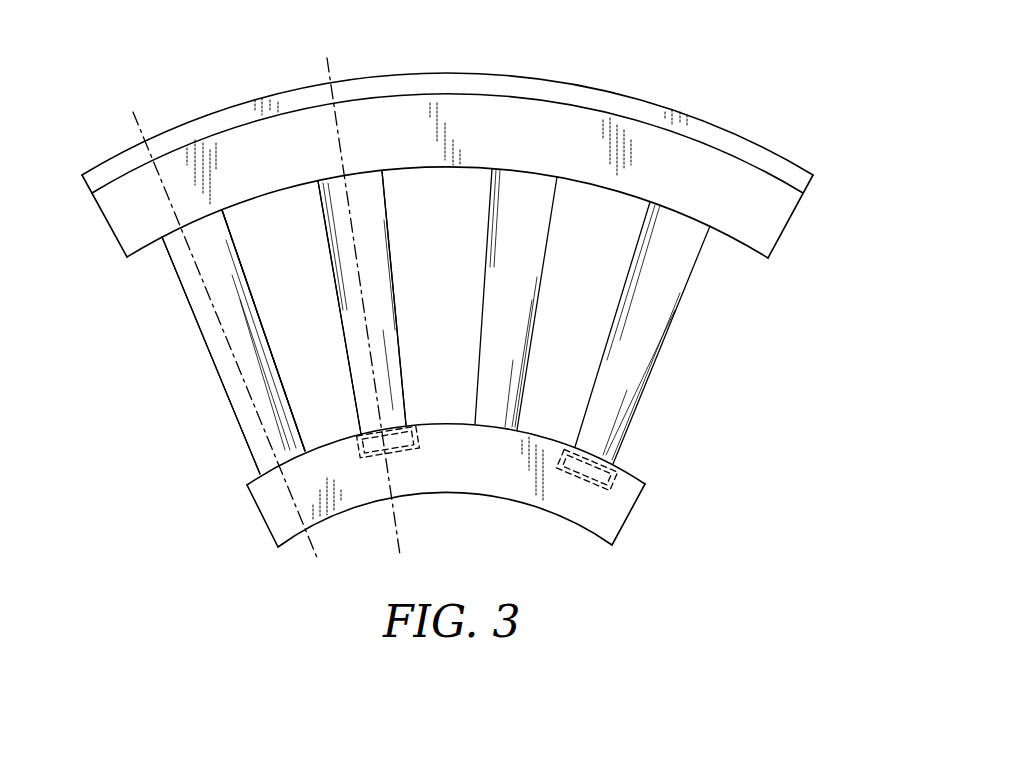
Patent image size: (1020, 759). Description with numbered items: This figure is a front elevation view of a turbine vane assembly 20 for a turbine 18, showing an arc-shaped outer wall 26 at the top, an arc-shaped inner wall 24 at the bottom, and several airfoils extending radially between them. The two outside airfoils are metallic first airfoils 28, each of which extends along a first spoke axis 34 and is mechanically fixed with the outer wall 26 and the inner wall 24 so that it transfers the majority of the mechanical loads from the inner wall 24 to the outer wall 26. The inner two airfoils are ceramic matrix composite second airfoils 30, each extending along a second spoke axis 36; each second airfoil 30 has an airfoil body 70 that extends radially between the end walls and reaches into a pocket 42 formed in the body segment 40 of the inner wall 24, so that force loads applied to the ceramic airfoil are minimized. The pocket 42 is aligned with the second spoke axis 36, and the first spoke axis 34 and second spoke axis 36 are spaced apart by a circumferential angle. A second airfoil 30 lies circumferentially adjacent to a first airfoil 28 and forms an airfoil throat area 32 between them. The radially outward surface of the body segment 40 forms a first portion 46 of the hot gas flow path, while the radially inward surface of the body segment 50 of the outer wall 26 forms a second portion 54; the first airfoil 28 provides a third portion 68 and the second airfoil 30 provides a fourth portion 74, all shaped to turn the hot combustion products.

The turbine 18 is at (465, 89).
The turbine vane assembly 20 is at (490, 137).
The inner wall 24 is at (494, 484).
The outer wall 26 is at (475, 208).
The first airfoil 28 is at (205, 342).
The second airfoil 30 is at (362, 227).
The airfoil throat area 32 is at (281, 244).
The first spoke axis 34 is at (312, 545).
The second spoke axis 36 is at (397, 525).
The body segment 40 is at (398, 512).
The pocket 42 is at (487, 481).
The first portion of the flow path 46 is at (330, 443).
The body segment 50 is at (159, 180).
The second portion of the flow path 54 is at (436, 164).
The third portion of the flow path 68 is at (218, 352).
The airfoil body 70 is at (399, 223).
The fourth portion of the flow path 74 is at (348, 258).